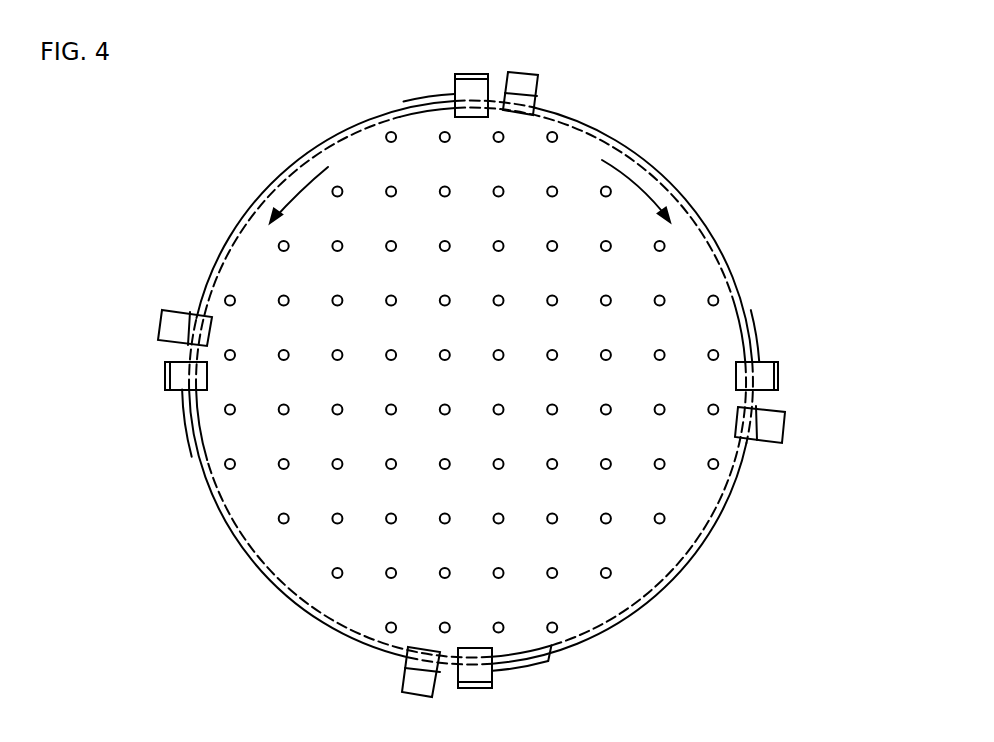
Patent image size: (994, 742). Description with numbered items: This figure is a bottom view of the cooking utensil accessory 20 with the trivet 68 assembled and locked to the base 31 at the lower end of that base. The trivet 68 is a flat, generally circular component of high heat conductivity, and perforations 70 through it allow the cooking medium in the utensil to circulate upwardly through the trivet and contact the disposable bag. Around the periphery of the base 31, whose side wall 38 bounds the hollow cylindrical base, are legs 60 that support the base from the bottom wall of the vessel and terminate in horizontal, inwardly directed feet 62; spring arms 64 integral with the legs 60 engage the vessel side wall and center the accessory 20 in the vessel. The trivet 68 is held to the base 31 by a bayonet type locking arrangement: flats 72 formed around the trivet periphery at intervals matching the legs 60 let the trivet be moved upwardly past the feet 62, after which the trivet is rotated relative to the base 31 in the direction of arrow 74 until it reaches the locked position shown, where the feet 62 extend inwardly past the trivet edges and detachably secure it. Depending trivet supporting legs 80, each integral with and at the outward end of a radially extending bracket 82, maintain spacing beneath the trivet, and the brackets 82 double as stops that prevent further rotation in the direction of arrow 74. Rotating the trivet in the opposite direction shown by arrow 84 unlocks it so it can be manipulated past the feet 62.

The cooking utensil accessory 20 is at (504, 366).
The base 31 is at (559, 656).
The side wall 38 is at (738, 290).
The legs 60 is at (542, 96).
The feet 62 is at (522, 118).
The spring arms 64 is at (522, 72).
The trivet 68 is at (690, 578).
The perforations 70 is at (441, 257).
The flats 72 is at (400, 110).
The arrow 74 is at (636, 182).
The trivet supporting legs 80 is at (465, 74).
The brackets 82 is at (435, 91).
The arrow 84 is at (296, 192).